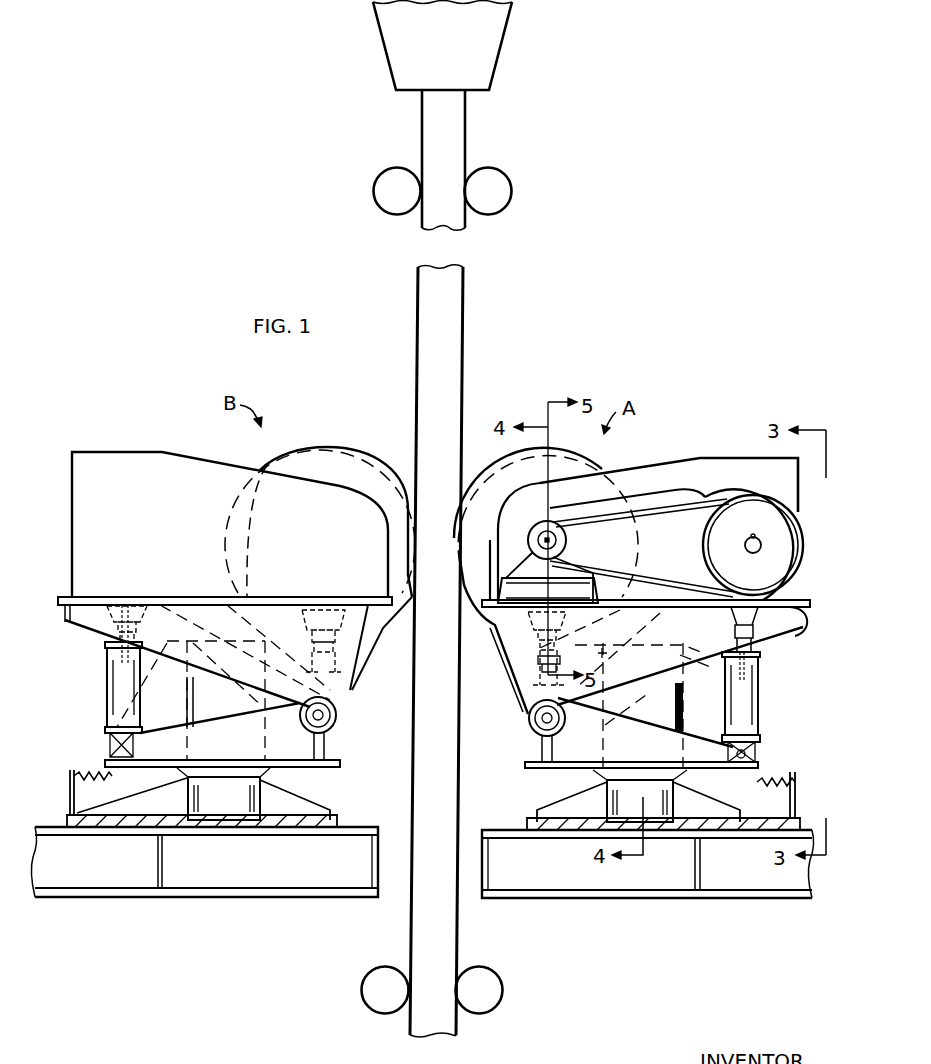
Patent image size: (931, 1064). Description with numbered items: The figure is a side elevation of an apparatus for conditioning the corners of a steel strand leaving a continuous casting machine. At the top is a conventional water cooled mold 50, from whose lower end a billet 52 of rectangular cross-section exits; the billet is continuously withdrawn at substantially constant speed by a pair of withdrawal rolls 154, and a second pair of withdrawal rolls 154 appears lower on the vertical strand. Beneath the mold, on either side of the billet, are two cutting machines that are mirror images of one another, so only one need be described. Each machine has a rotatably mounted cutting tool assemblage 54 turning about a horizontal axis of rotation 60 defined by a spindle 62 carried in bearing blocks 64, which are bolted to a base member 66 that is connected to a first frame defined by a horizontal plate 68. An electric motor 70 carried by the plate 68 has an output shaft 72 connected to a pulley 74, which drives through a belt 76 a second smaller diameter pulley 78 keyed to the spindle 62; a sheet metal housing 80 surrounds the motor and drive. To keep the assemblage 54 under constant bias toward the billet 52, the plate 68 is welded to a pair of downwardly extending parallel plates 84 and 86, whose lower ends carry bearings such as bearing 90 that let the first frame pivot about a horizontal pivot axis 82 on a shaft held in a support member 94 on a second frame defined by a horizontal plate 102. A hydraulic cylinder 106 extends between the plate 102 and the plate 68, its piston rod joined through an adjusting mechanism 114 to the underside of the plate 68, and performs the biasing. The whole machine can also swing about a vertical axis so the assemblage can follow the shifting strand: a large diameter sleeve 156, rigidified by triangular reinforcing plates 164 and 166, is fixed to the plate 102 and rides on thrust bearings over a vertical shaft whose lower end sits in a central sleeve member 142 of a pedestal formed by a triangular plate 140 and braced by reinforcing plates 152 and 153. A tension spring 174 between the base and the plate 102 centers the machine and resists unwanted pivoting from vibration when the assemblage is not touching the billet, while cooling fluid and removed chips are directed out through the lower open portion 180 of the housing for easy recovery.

The water cooled mold 50 is at (498, 60).
The billet 52 is at (466, 129).
The cutting tool assemblage 54 is at (455, 526).
The axis of rotation 60 is at (566, 538).
The spindle 62 is at (541, 524).
The bearing blocks 64 is at (573, 555).
The base member 66 is at (596, 613).
The plate 68 is at (797, 630).
The electric motor 70 is at (805, 543).
The output shaft 72 is at (758, 551).
The pulley 74 is at (790, 555).
The belt 76 is at (695, 512).
The second pulley 78 is at (557, 520).
The sheet metal housing 80 is at (681, 459).
The horizontal pivot axis 82 is at (529, 718).
The downwardly extending plate 84 is at (680, 676).
The downwardly extending plate 86 is at (637, 678).
The bearing 90 is at (688, 738).
The support member 94 is at (533, 735).
The plate 102 is at (553, 773).
The hydraulic cylinder 106 is at (759, 692).
The adjusting mechanism 114 is at (760, 636).
The triangular plate 140 is at (558, 832).
The central sleeve member 142 is at (673, 807).
The reinforcing plate 152 is at (550, 805).
The reinforcing plate 153 is at (759, 786).
The withdrawal rolls 154 is at (362, 991).
The large diameter sleeve 156 is at (600, 740).
The reinforcing plate 164 is at (718, 722).
The reinforcing plate 166 is at (626, 688).
The tension spring 174 is at (85, 764).
The lower open portion 180 is at (517, 690).